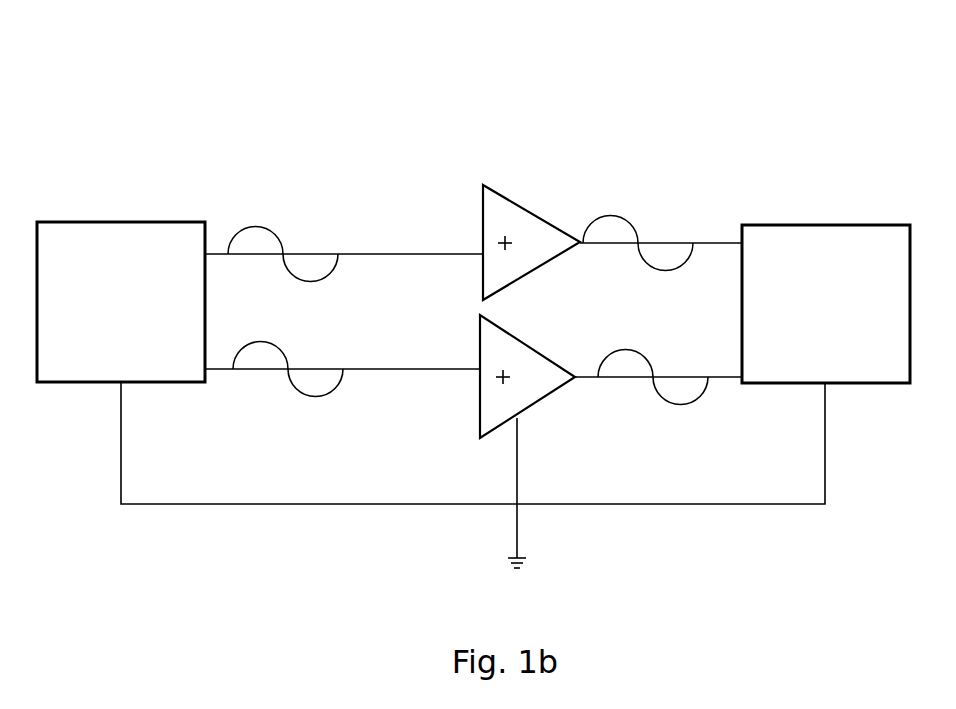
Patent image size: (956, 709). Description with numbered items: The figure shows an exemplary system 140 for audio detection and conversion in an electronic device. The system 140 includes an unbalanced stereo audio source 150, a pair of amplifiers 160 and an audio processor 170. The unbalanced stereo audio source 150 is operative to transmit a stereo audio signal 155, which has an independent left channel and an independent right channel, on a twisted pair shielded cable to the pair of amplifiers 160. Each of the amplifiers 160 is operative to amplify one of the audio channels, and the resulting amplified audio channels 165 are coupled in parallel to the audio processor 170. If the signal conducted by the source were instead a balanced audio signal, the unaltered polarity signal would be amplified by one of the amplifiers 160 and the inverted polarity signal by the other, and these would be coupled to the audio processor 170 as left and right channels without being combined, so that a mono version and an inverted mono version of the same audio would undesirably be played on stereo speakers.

The system 140 is at (535, 48).
The unbalanced stereo audio source 150 is at (121, 302).
The stereo audio signal 155 is at (287, 206).
The pair of amplifiers 160 is at (502, 175).
The amplified output signals 165 is at (622, 190).
The audio processor 170 is at (826, 304).